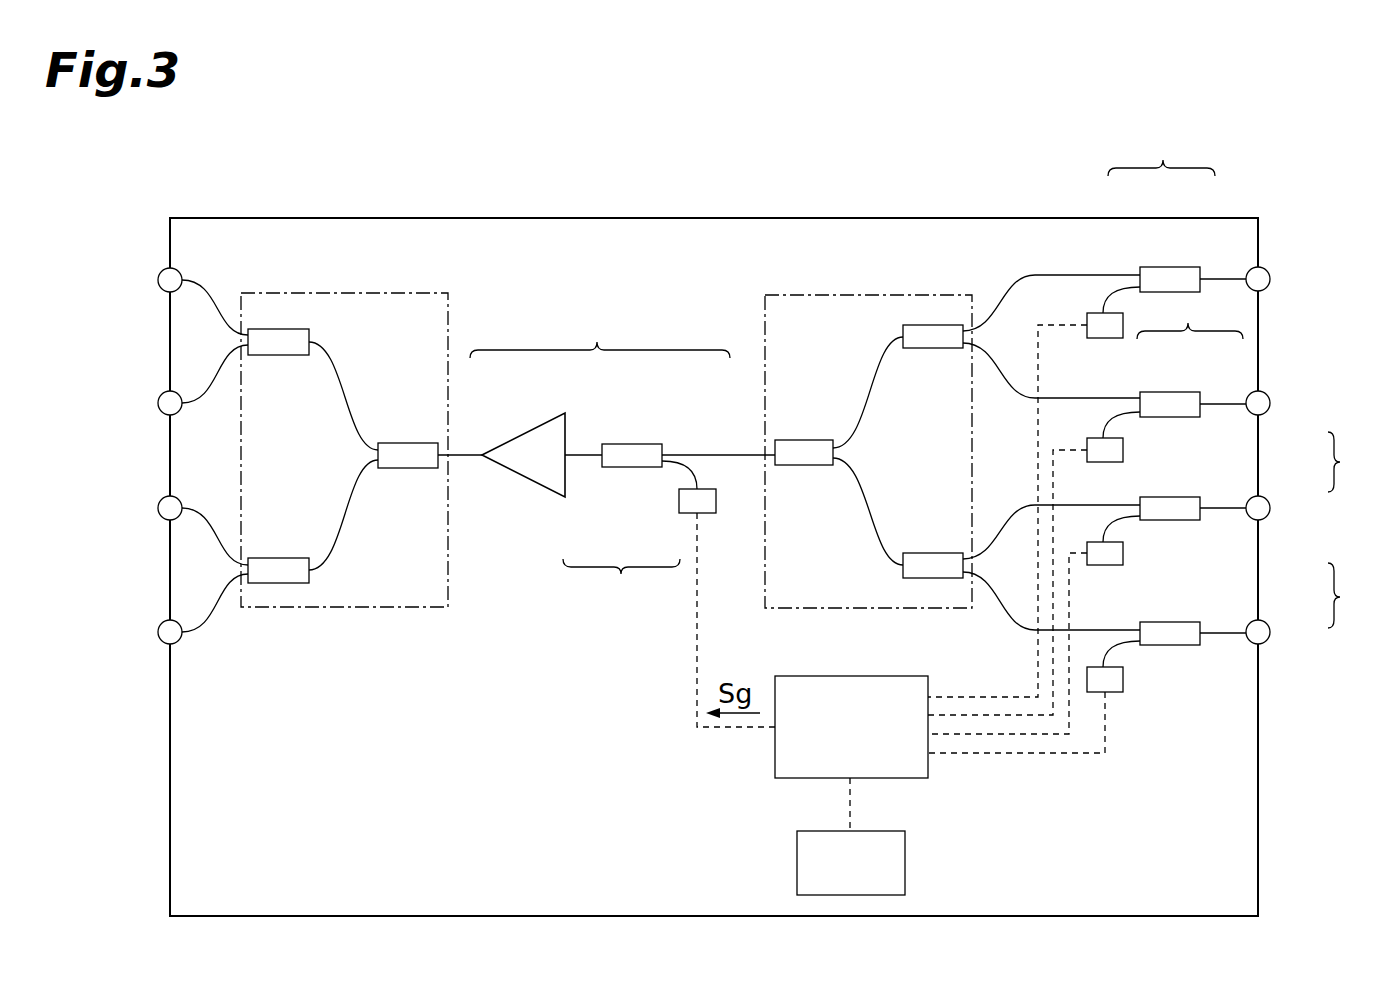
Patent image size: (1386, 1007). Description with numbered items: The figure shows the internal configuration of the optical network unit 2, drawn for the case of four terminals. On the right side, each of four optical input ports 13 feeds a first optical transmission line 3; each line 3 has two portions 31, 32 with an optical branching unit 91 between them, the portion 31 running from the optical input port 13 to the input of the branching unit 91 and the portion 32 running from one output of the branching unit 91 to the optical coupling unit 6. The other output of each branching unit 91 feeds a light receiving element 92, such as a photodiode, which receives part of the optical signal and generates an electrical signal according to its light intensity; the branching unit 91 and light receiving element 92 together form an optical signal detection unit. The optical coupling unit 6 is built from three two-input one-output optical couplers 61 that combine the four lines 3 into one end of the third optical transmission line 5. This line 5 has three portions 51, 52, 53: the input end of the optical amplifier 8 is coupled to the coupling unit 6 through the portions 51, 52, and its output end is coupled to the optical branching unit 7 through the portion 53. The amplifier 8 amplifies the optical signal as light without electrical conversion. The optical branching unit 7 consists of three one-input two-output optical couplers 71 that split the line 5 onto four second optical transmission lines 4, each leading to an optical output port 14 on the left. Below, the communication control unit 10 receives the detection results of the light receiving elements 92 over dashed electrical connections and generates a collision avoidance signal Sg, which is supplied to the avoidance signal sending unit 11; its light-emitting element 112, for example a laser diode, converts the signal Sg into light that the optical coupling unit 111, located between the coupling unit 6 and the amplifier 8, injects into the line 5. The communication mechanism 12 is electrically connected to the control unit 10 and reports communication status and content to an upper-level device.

The optical network unit 2 is at (1030, 210).
The optical transmission line 3 is at (1235, 380).
The optical transmission line 4 is at (215, 297).
The optical transmission line 5 is at (600, 337).
The optical coupling unit 6 is at (865, 293).
The optical branching unit 7 is at (363, 608).
The optical amplifier 8 is at (517, 478).
The communication control unit 10 is at (775, 757).
The avoidance signal sending unit 11 is at (621, 581).
The communication mechanism 12 is at (905, 860).
The optical input port 13 is at (1270, 279).
The optical output port 14 is at (158, 280).
The portion 31 is at (1222, 277).
The portion 32 is at (1098, 275).
The portion 51 is at (715, 453).
The portion 52 is at (588, 453).
The portion 53 is at (473, 453).
The optical coupler 61 is at (808, 467).
The optical coupler 71 is at (275, 356).
The optical branching unit 91 is at (1200, 290).
The light receiving element 92 is at (1103, 338).
The optical coupling unit 111 is at (625, 468).
The light-emitting element 112 is at (679, 502).